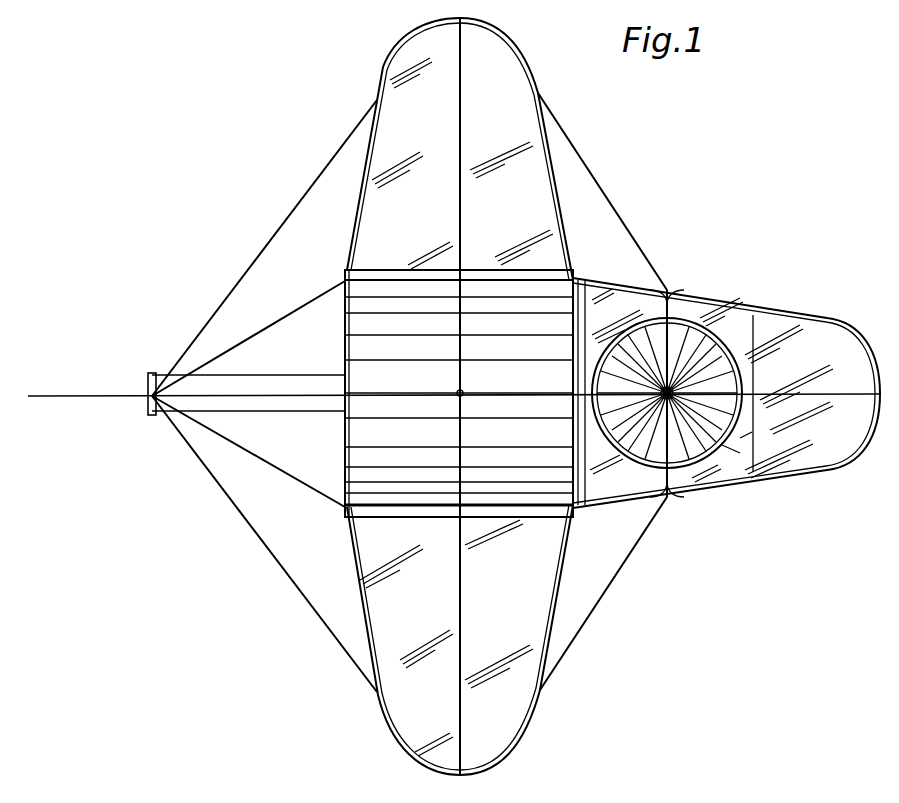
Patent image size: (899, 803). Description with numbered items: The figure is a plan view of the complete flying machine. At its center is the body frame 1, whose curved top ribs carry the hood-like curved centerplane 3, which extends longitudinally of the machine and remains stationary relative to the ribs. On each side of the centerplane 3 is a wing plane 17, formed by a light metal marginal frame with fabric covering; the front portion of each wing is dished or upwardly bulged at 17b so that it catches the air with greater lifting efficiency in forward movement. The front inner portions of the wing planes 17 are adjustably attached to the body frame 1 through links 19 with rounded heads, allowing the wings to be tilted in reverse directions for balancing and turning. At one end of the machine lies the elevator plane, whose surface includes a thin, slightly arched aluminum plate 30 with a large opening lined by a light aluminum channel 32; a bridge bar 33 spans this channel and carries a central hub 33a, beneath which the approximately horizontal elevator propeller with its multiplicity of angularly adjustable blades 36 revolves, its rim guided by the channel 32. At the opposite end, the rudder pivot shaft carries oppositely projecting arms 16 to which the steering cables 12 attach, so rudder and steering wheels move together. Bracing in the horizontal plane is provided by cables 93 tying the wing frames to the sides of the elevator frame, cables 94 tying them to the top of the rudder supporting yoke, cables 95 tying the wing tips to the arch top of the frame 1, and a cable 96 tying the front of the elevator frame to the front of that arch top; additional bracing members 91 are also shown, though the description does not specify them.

The body frame 1 is at (461, 393).
The centerplane 3 is at (370, 295).
The steering cables 12 is at (260, 378).
The oppositely projecting arms 16 is at (150, 398).
The wing planes 17 is at (380, 125).
The dished portion of wing plane 17b is at (548, 250).
The links 19 is at (573, 370).
The aluminum plate 30 is at (745, 440).
The aluminum channel 32 is at (722, 447).
The bridge bar 33 is at (672, 308).
The central hub 33a is at (665, 402).
The propeller blades 36 is at (718, 358).
The inner stay 91 is at (300, 310).
The cables 93 is at (620, 215).
The cables 94 is at (290, 210).
The cables 95 is at (460, 232).
The cable 96 is at (855, 393).